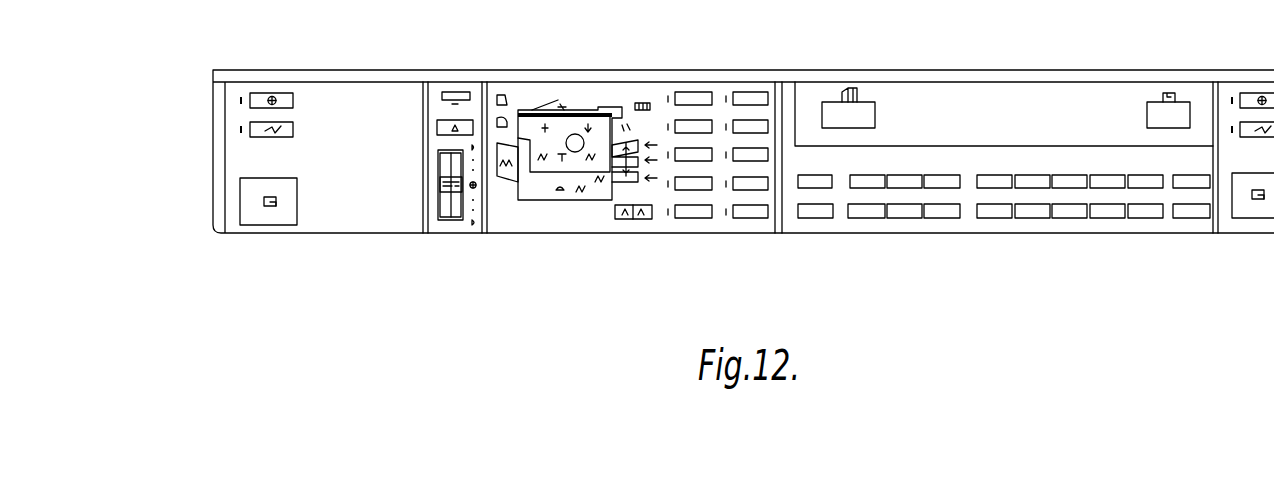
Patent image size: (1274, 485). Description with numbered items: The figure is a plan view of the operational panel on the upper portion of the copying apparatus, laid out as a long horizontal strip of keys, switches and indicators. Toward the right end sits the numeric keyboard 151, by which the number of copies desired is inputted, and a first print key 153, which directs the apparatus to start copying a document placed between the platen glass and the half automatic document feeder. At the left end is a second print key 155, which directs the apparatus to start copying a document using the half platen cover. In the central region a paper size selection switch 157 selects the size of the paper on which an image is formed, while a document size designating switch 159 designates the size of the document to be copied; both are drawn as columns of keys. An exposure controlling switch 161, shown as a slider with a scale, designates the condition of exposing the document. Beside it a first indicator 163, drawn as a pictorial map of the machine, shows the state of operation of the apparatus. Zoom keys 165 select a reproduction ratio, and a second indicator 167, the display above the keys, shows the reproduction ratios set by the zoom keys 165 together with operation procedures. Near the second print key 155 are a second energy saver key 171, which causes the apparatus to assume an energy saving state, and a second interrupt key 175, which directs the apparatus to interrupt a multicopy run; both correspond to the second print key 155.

The numeric keyboard 151 is at (1043, 222).
The first print key 153 is at (1263, 222).
The second print key 155 is at (276, 215).
The paper size selection switch 157 is at (752, 225).
The document size designating switch 159 is at (692, 225).
The exposure controlling switch 161 is at (455, 225).
The first indicator 163 is at (555, 225).
The zoom keys 165 is at (885, 222).
The second indicator 167 is at (962, 80).
The second energy saver key 171 is at (252, 104).
The second interrupt key 175 is at (252, 135).